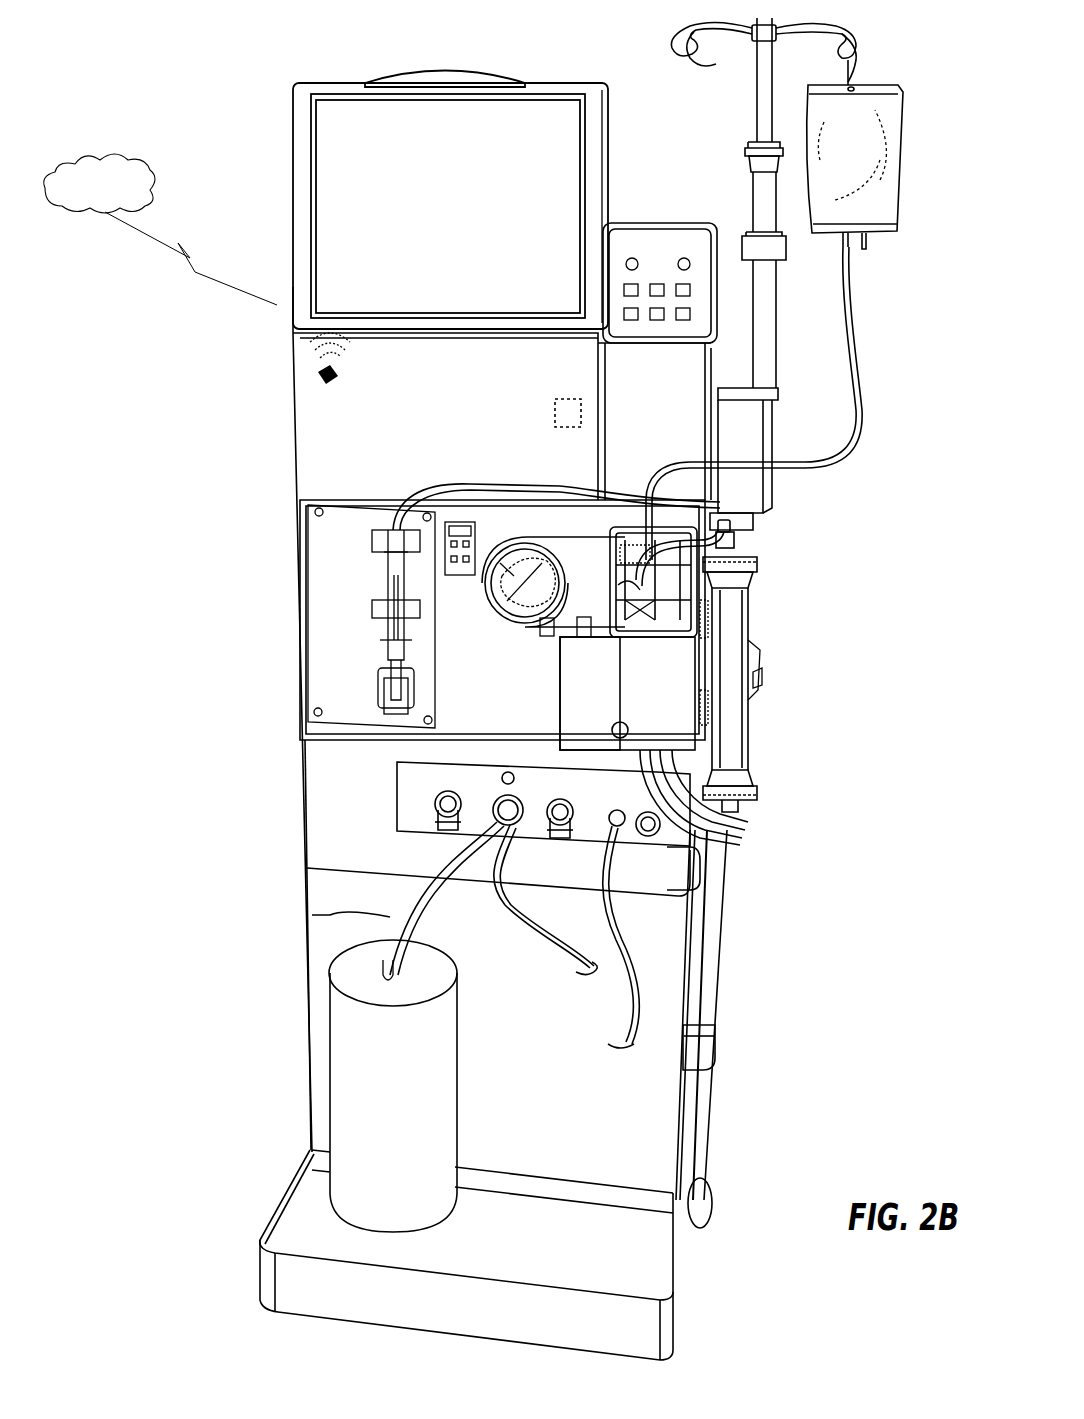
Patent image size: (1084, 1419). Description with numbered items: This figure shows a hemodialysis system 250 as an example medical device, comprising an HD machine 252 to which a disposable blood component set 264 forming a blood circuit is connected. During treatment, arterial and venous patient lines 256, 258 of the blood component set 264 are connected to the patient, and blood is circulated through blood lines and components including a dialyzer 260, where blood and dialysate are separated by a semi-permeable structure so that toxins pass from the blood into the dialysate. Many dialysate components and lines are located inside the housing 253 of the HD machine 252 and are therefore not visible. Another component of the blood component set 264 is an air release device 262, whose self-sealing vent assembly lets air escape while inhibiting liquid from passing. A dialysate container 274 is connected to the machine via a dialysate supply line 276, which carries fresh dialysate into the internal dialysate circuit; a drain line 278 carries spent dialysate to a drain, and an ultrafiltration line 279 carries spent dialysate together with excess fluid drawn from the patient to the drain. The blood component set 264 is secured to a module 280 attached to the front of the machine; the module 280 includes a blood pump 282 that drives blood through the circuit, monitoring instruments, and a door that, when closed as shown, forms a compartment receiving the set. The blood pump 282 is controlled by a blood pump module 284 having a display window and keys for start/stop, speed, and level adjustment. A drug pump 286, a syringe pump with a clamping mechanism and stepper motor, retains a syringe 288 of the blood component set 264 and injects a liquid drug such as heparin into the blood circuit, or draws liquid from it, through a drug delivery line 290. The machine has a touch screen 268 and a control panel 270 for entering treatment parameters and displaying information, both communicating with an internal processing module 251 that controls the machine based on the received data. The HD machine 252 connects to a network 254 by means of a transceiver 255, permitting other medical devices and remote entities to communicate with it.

The hemodialysis system 250 is at (118, 97).
The processing module 251 is at (552, 415).
The HD machine 252 is at (286, 680).
The housing 253 is at (298, 608).
The network 254 is at (160, 229).
The transceiver 255 is at (312, 376).
The arterial patient line 256 is at (672, 868).
The venous patient line 258 is at (738, 845).
The dialyzer 260 is at (730, 740).
The air release device 262 is at (665, 598).
The blood component set 264 is at (795, 634).
The touch screen 268 is at (570, 108).
The control panel 270 is at (650, 242).
The dialysate container 274 is at (355, 1088).
The dialysate supply line 276 is at (385, 935).
The drain line 278 is at (540, 935).
The ultrafiltration line 279 is at (632, 1018).
The module 280 is at (693, 517).
The blood pump 282 is at (850, 290).
The blood pump module 284 is at (878, 115).
The drug pump 286 is at (348, 636).
The syringe 288 is at (376, 650).
The drug delivery line 290 is at (440, 488).